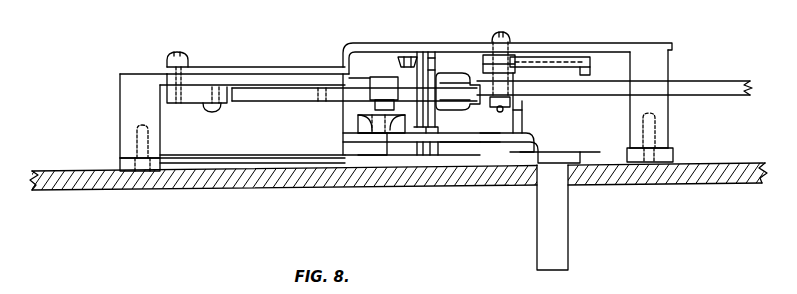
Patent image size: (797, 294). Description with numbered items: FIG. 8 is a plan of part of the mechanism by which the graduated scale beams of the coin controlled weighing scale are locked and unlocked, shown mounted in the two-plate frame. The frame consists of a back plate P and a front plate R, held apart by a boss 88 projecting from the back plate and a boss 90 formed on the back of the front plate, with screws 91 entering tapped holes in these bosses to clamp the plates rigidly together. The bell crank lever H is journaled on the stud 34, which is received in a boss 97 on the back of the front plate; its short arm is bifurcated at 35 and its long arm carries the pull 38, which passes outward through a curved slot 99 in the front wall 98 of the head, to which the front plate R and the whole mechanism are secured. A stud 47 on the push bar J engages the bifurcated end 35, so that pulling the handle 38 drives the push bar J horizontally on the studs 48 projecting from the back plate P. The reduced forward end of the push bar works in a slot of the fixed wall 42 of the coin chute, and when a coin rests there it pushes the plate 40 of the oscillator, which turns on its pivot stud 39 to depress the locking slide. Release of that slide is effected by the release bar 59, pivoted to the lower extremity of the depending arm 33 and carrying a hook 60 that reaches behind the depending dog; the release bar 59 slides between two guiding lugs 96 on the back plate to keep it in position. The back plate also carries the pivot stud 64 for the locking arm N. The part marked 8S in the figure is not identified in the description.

The boss 88 is at (118, 118).
The frame side wall 8S is at (671, 120).
The release bar 59 is at (276, 66).
The bifurcated end 35 is at (361, 77).
The depending arm 33 is at (200, 105).
The push bar J is at (258, 104).
The studs 48 is at (318, 103).
The stud 47 is at (382, 82).
The stud 34 is at (378, 143).
The fixed wall of coin chute 42 is at (409, 57).
The plate 40 is at (436, 58).
The back plate P is at (448, 42).
The stud 39 is at (460, 66).
The screws 91 is at (511, 38).
The guiding lugs 96 is at (548, 59).
The hook 60 is at (591, 69).
The locking arm N is at (614, 79).
The pivot stud 64 is at (520, 92).
The boss 90 is at (518, 115).
The curved slot 99 is at (532, 187).
The pull 38 is at (556, 245).
The front wall 98 is at (225, 184).
The front plate R is at (282, 161).
The boss 97 is at (352, 150).
The bell crank lever H is at (455, 143).